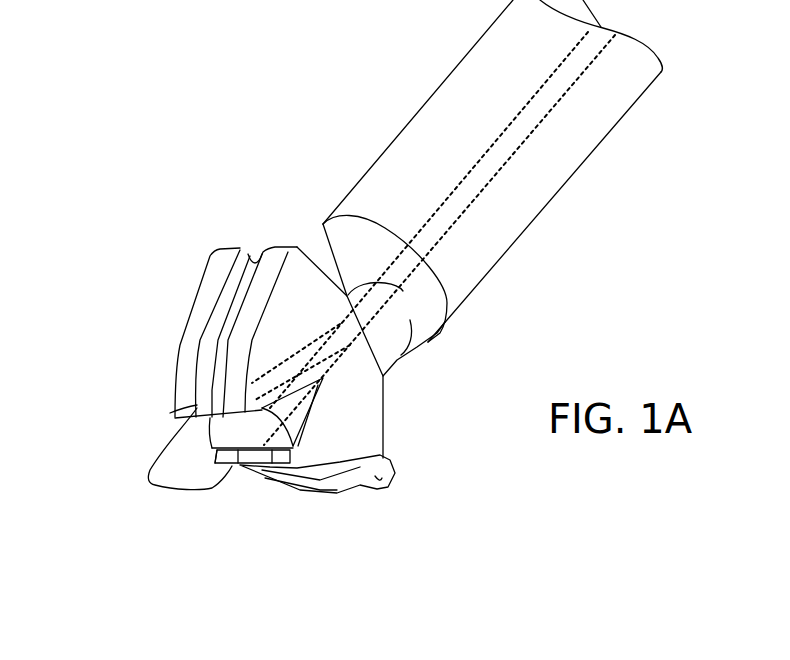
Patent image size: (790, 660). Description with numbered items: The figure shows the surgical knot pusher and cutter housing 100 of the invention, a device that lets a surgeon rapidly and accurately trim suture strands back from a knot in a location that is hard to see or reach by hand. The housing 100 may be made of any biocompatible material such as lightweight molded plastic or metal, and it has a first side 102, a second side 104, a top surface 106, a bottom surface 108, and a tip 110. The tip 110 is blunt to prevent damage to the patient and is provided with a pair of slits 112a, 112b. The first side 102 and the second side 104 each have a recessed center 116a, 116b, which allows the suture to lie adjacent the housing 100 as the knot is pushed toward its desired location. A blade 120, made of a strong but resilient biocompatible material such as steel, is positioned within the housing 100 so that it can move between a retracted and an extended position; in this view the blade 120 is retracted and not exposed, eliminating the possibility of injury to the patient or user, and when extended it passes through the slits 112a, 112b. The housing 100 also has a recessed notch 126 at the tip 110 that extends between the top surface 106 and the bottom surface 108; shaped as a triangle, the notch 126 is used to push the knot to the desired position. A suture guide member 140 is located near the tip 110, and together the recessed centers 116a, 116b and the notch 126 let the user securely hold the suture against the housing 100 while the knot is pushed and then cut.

The housing 100 is at (150, 296).
The first side 102 is at (214, 277).
The second side 104 is at (243, 467).
The top surface 106 is at (322, 322).
The bottom surface 108 is at (170, 413).
The tip 110 is at (195, 490).
The slit 112a is at (197, 387).
The slit 112b is at (267, 470).
The recessed center 116a is at (257, 265).
The recessed center 116b is at (232, 467).
The blade 120 is at (473, 163).
The recessed notch 126 is at (316, 416).
The suture guide member 140 is at (387, 493).